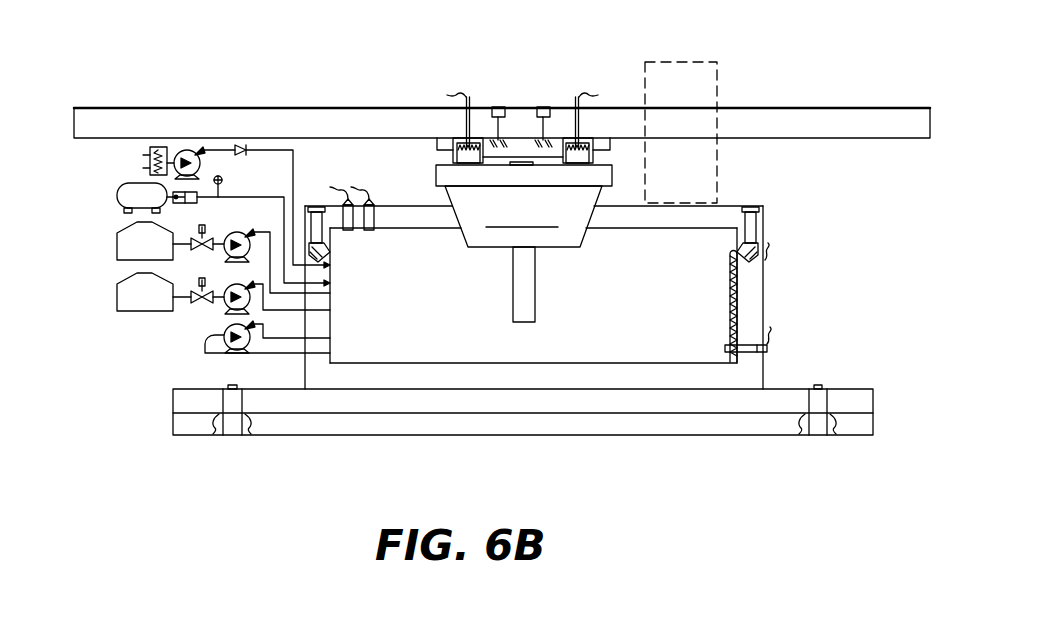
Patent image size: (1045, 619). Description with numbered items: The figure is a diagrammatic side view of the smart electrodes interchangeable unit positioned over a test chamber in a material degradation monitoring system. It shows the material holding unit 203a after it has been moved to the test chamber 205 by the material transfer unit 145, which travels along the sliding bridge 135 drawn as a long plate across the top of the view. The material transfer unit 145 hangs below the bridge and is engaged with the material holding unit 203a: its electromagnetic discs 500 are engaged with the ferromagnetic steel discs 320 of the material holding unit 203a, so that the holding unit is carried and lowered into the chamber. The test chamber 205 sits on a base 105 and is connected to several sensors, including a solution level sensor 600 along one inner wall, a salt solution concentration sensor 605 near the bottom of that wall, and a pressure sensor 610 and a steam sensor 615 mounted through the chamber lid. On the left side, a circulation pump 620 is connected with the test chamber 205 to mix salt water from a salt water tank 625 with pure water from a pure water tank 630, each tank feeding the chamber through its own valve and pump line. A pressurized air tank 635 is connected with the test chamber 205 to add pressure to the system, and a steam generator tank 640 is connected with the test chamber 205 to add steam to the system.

The sliding bridge 135 is at (92, 113).
The steam generator tank 640 is at (155, 147).
The pressurized air tank 635 is at (117, 198).
The pure water tank 630 is at (117, 250).
The salt water tank 625 is at (117, 303).
The circulation pump 620 is at (205, 351).
The electromagnetic discs 500 is at (433, 107).
The material transfer unit 145 is at (610, 107).
The ferromagnetic steel discs 320 is at (593, 157).
The test chamber 205 is at (727, 213).
The material holding unit 203a is at (524, 243).
The pressure sensor 610 is at (369, 232).
The steam sensor 615 is at (348, 232).
The solution level sensor 600 is at (735, 292).
The salt solution concentration sensor 605 is at (770, 352).
The base plate 105 is at (653, 425).